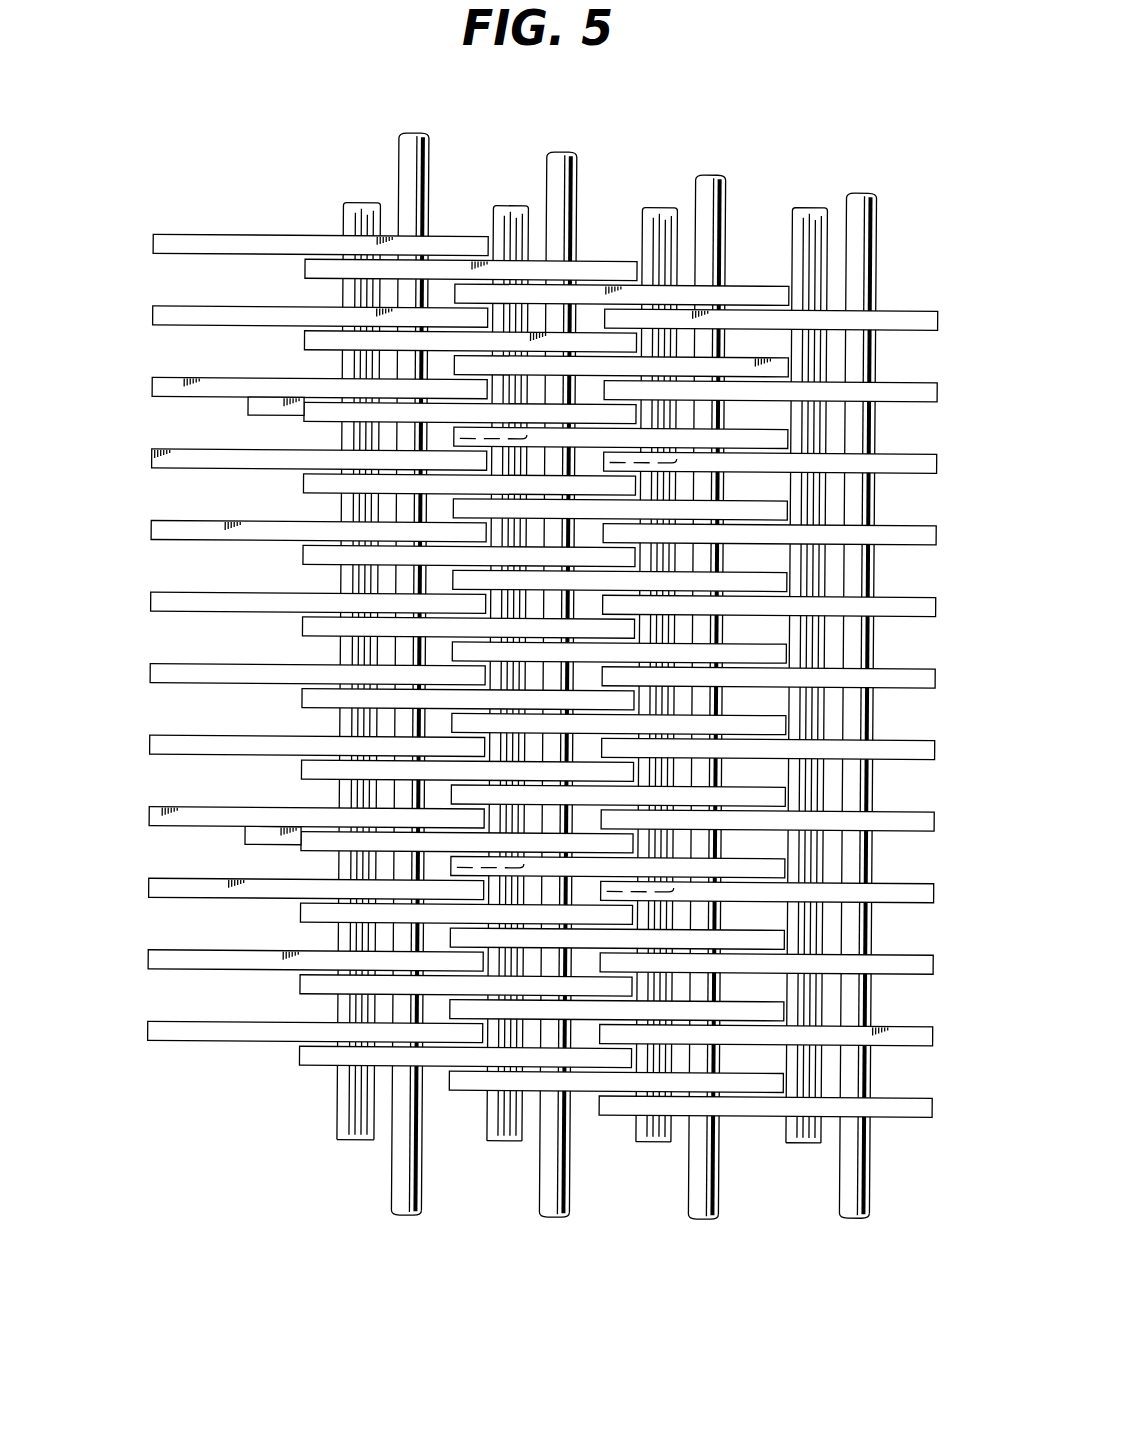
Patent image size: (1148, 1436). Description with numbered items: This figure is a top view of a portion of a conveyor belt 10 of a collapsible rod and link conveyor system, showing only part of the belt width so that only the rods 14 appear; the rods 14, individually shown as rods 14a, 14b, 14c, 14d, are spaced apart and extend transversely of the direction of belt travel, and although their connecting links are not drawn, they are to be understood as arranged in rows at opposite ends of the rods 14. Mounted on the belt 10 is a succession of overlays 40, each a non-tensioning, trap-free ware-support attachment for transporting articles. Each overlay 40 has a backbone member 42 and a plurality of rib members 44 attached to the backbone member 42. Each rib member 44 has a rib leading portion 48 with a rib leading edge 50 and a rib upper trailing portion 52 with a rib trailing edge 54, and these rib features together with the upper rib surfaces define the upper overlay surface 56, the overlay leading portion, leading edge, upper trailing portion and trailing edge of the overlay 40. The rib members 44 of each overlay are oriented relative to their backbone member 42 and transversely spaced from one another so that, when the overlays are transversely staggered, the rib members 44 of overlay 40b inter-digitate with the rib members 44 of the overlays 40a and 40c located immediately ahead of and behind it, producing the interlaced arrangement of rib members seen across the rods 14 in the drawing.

The belt 10 is at (756, 91).
The rods 14 is at (681, 1225).
The rod 14a is at (863, 192).
The rod 14b is at (722, 177).
The rod 14c is at (570, 153).
The rod 14d is at (427, 133).
The overlay 40 is at (353, 186).
The overlay 40a is at (812, 208).
The overlay 40b is at (657, 208).
The overlay 40c is at (510, 206).
The backbone member 42 is at (795, 1142).
The rib members 44 is at (147, 808).
The rib leading portion 48 is at (880, 387).
The rib leading edge 50 is at (937, 314).
The rib upper trailing portion 52 is at (235, 315).
The rib trailing edge 54 is at (152, 386).
The upper overlay surface 56 is at (452, 244).